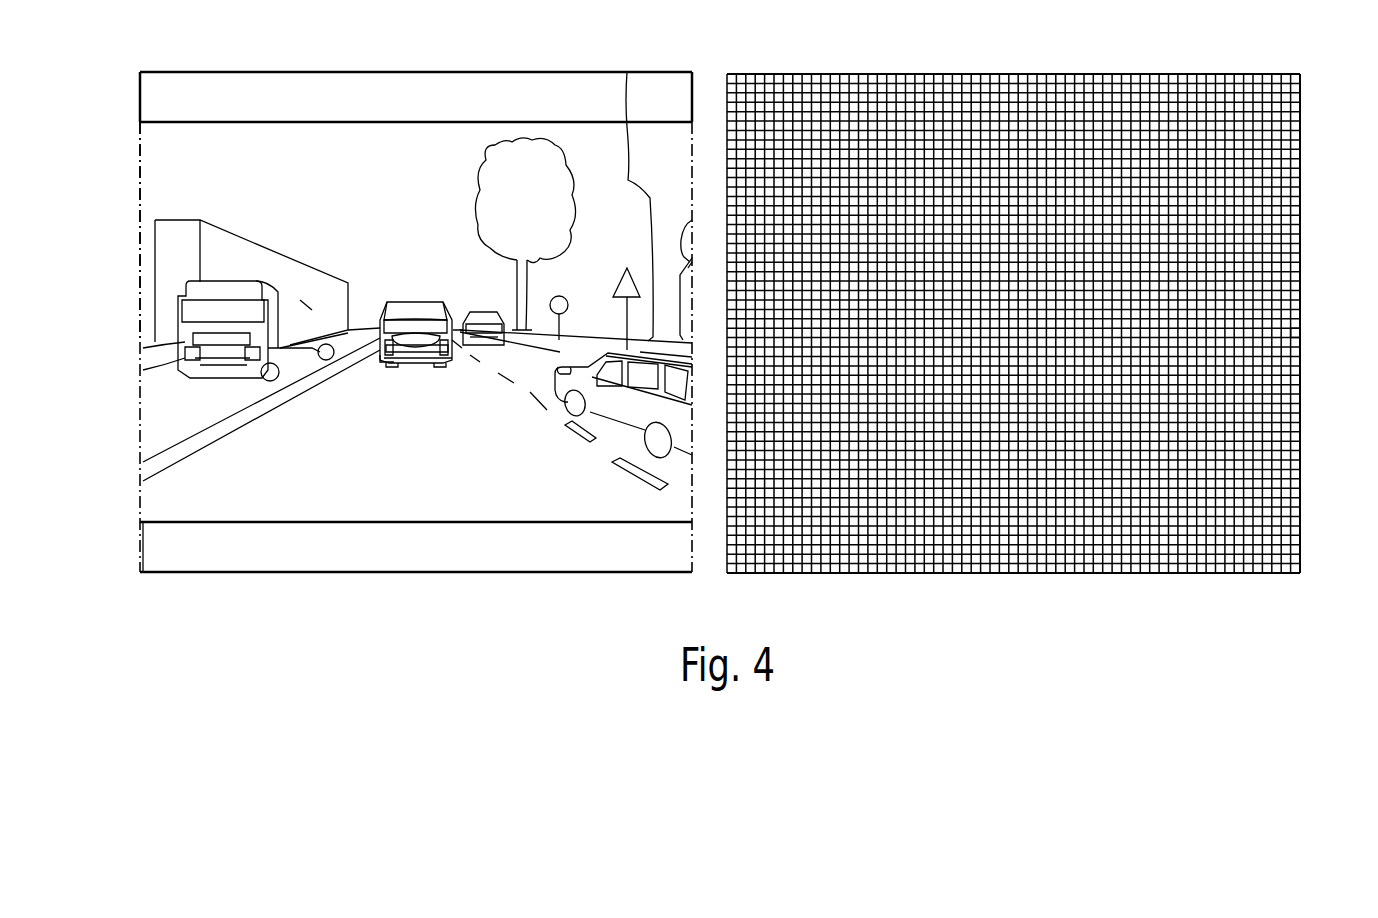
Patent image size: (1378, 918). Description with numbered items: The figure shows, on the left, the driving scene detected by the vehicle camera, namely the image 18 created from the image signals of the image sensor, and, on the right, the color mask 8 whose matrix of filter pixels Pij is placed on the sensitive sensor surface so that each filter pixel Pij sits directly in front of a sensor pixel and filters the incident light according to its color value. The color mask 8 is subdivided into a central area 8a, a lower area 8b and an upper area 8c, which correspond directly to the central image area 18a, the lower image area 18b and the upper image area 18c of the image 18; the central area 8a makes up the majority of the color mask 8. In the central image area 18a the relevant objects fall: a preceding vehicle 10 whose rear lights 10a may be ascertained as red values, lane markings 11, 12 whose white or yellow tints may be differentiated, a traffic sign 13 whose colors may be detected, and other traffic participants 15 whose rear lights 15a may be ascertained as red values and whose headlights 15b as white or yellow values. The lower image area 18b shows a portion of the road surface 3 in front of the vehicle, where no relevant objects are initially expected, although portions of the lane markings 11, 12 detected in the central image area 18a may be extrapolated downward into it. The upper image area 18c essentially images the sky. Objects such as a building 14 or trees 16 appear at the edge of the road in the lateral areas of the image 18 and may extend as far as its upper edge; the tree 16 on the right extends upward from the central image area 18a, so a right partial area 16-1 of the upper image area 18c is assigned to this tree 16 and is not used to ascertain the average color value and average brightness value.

The road surface 3 is at (357, 545).
The color mask 8 is at (757, 73).
The central area 8a is at (1283, 205).
The lower area 8b is at (1035, 578).
The upper area 8c is at (1035, 73).
The filter pixel Pij is at (1297, 332).
The preceding vehicle 10 is at (418, 300).
The rear lights 10a is at (384, 366).
The lane marking 11 is at (632, 476).
The lane marking 12 is at (190, 447).
The traffic sign 13 is at (563, 297).
The building 14 is at (175, 243).
The other traffic participant 15 is at (308, 318).
The rear lights 15a is at (460, 345).
The headlights 15b is at (177, 358).
The tree 16 is at (522, 178).
The right partial area 16-1 is at (648, 85).
The image 18 is at (173, 72).
The central image area 18a is at (165, 162).
The lower image area 18b is at (435, 558).
The upper image area 18c is at (385, 95).